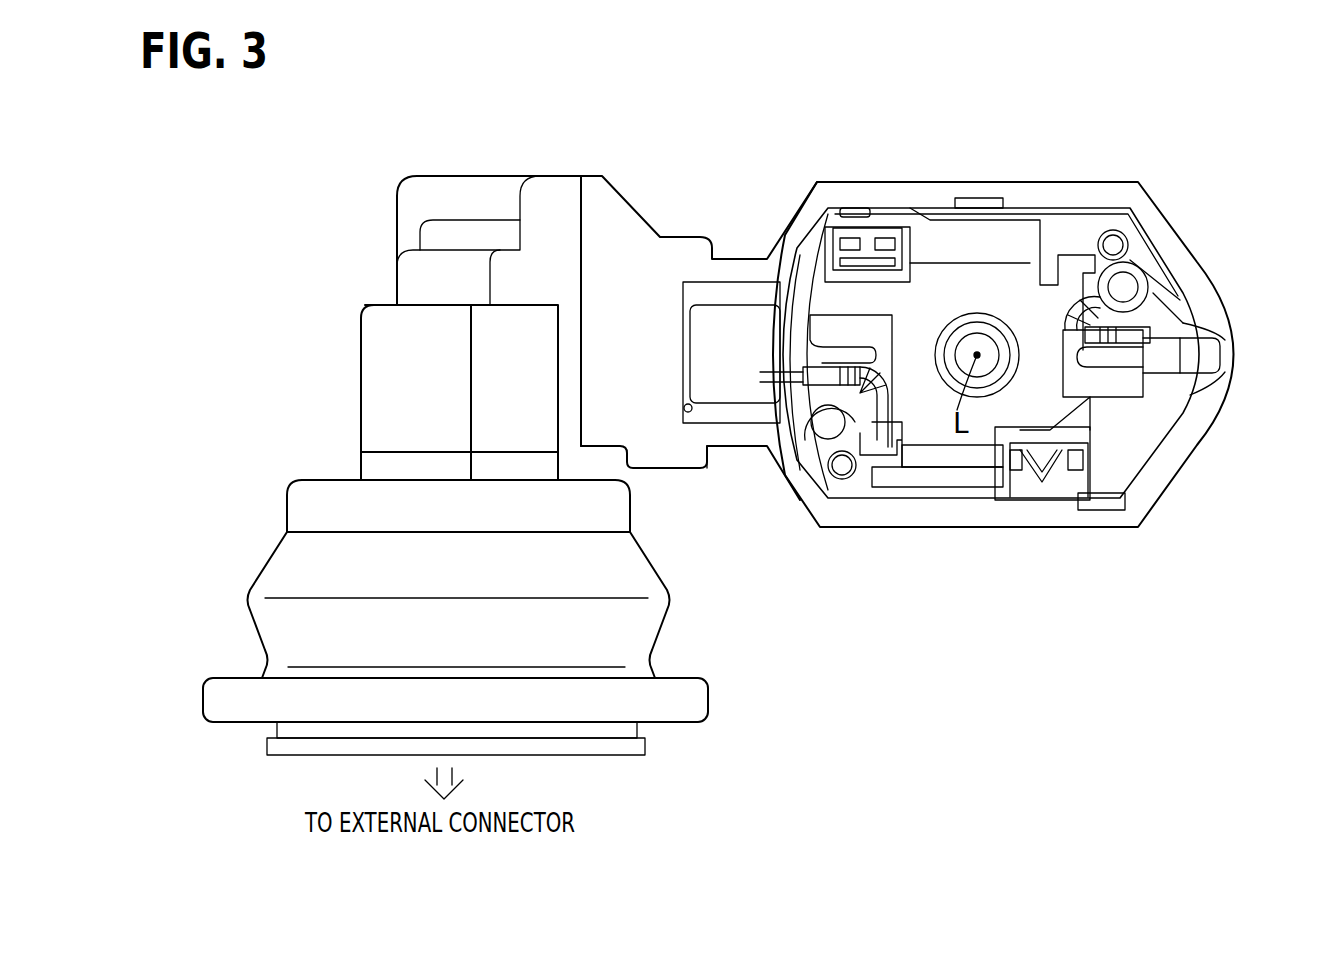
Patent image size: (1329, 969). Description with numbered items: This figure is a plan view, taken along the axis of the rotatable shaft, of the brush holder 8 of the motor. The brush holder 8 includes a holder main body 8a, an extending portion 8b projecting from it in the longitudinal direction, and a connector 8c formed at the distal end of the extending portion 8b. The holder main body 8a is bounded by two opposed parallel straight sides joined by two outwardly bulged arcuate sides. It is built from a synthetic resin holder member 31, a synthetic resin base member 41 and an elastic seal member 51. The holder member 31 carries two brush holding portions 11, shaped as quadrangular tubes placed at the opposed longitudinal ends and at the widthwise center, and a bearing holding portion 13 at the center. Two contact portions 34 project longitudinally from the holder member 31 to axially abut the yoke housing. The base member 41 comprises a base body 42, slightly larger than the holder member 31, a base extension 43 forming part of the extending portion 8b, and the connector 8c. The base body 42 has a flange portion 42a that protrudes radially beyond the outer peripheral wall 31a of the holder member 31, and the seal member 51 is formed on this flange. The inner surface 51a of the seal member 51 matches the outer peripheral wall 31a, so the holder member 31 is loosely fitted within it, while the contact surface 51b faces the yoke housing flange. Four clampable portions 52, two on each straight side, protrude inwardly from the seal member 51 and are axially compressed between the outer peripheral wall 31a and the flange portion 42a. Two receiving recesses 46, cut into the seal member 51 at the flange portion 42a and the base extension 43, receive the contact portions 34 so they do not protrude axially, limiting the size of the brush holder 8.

The brush holder 8 is at (1178, 131).
The holder main body 8a is at (1153, 193).
The extending portion 8b is at (685, 232).
The connector 8c is at (265, 570).
The brush holding portion 11 is at (873, 332).
The bearing holding portion 13 is at (968, 332).
The holder member 31 is at (1123, 463).
The outer peripheral wall 31a is at (1140, 237).
The contact portion 34 is at (700, 360).
The base member 41 is at (1100, 449).
The base body 42 is at (1197, 395).
The flange portion 42a is at (1193, 323).
The base extension 43 is at (723, 417).
The receiving recess 46 is at (685, 410).
The seal member 51 is at (1117, 188).
The inner surface 51a is at (1207, 283).
The contact surface 51b is at (1008, 187).
The clampable portion 52 is at (903, 212).